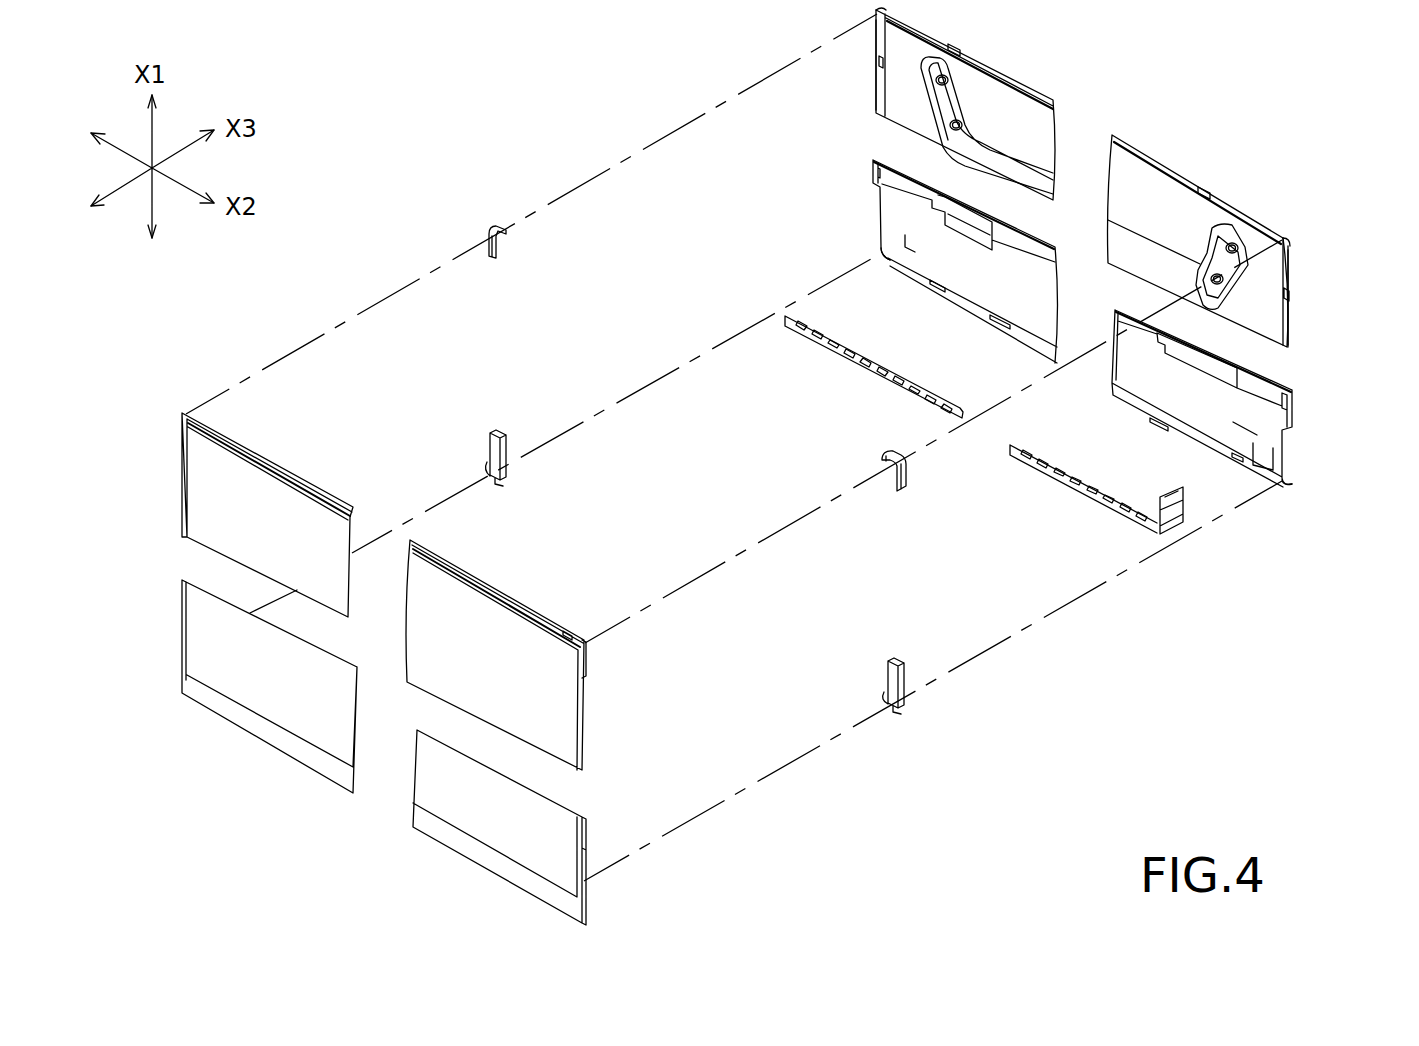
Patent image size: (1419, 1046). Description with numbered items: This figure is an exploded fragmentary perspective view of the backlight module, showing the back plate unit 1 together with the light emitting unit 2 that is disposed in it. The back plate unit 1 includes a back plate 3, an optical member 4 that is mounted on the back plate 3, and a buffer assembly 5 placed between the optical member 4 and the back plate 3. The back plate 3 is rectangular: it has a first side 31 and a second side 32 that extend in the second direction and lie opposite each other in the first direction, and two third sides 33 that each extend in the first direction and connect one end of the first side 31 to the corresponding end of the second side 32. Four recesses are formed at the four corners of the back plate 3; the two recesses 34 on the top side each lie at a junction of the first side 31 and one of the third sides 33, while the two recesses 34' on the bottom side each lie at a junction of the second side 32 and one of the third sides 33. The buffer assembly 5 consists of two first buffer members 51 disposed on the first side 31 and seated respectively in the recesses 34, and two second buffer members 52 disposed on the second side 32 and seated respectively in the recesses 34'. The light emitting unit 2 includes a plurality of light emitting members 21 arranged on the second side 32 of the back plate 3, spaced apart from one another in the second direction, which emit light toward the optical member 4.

The back plate unit 1 is at (1259, 286).
The light emitting unit 2 is at (984, 485).
The light emitting members 21 is at (1035, 465).
The back plate 3 is at (1221, 164).
The first side 31 is at (1018, 83).
The second side 32 is at (1200, 438).
The third sides 33 is at (877, 80).
The recesses 34 is at (1042, 127).
The recesses 34' is at (1051, 385).
The optical member 4 is at (267, 773).
The buffer assembly 5 is at (687, 474).
The first buffer members 51 is at (487, 230).
The second buffer members 52 is at (490, 445).